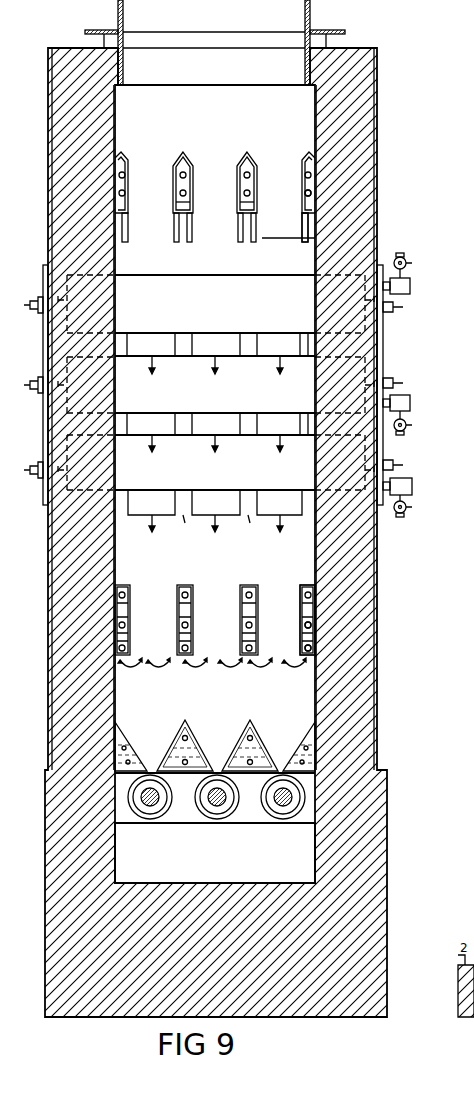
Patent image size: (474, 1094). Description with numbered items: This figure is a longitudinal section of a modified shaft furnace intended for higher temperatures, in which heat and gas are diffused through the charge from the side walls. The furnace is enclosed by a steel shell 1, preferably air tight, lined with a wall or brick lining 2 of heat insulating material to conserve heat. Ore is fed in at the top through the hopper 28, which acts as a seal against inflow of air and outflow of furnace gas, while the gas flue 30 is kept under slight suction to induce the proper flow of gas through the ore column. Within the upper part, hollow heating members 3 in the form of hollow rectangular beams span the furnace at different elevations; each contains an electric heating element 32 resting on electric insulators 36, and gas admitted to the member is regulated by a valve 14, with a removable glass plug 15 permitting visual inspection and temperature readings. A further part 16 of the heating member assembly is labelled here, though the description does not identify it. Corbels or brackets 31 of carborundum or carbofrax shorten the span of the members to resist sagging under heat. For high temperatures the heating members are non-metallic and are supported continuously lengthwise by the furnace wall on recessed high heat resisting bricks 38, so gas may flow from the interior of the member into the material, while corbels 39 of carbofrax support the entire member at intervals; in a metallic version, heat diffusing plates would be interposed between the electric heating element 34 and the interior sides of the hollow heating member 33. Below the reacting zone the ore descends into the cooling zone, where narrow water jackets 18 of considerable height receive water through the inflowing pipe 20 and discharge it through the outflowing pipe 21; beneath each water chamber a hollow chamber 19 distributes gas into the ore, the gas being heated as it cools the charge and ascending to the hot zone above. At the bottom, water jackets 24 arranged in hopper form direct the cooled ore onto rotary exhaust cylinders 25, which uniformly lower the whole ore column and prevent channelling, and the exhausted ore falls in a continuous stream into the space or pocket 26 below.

The steel shell 1 is at (379, 543).
The wall or brick lining 2 is at (350, 563).
The hollow heating member 3 is at (317, 164).
The valve 14 is at (408, 391).
The removable glass plug 15 is at (410, 485).
The burner leg 16 is at (300, 225).
The water jacket 18 is at (258, 617).
The hollow chamber 19 is at (316, 652).
The inflowing water pipe 20 is at (311, 635).
The outflowing water pipe 21 is at (316, 595).
The water jacket 24 is at (318, 748).
The rotary exhaust cylinder 25 is at (305, 797).
The space or pocket 26 is at (285, 845).
The hopper 28 is at (311, 18).
The gas flue 30 is at (340, 40).
The corbel or bracket 31 is at (315, 238).
The electric heating element 32 is at (308, 192).
The hollow heating member 33 is at (215, 376).
The electric heating element 34 is at (223, 385).
The electric insulator 36 is at (305, 205).
The recessed high heat resisting brick 38 is at (215, 432).
The corbel 39 is at (216, 438).